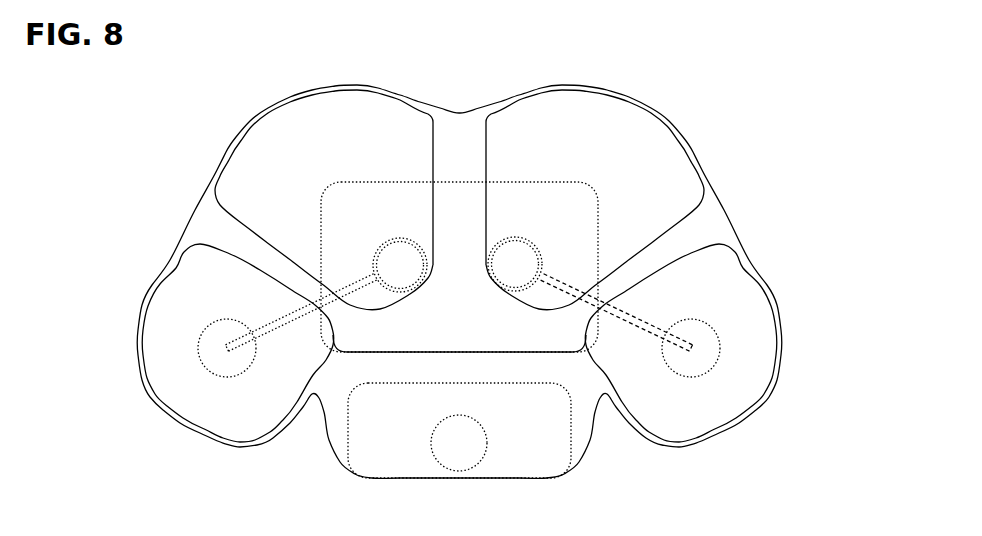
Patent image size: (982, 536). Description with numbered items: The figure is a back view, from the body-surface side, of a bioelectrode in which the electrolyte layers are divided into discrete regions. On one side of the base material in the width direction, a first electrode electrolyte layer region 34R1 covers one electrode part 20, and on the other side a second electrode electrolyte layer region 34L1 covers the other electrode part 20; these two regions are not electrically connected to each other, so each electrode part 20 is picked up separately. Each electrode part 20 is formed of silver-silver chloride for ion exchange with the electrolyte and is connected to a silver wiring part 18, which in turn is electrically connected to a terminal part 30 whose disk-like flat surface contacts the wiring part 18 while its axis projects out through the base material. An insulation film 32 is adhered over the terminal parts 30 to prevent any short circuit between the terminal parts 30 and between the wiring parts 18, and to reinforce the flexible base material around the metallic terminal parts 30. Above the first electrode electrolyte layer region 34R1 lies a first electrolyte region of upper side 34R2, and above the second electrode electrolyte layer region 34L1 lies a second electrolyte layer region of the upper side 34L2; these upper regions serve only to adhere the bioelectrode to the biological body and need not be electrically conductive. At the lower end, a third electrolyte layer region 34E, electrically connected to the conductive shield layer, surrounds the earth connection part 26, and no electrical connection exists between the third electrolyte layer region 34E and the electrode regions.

The wiring part 18 is at (648, 318).
The electrode part 20 is at (720, 364).
The earth connection part 26 is at (438, 447).
The terminal part 30 is at (537, 257).
The insulation film 32 is at (393, 330).
The first electrode electrolyte layer region 34R1 is at (183, 307).
The first electrolyte region of upper side 34R2 is at (254, 158).
The second electrode electrolyte layer region 34L1 is at (718, 406).
The second electrolyte layer region of the upper side 34L2 is at (670, 163).
The third electrolyte layer region 34E is at (530, 462).